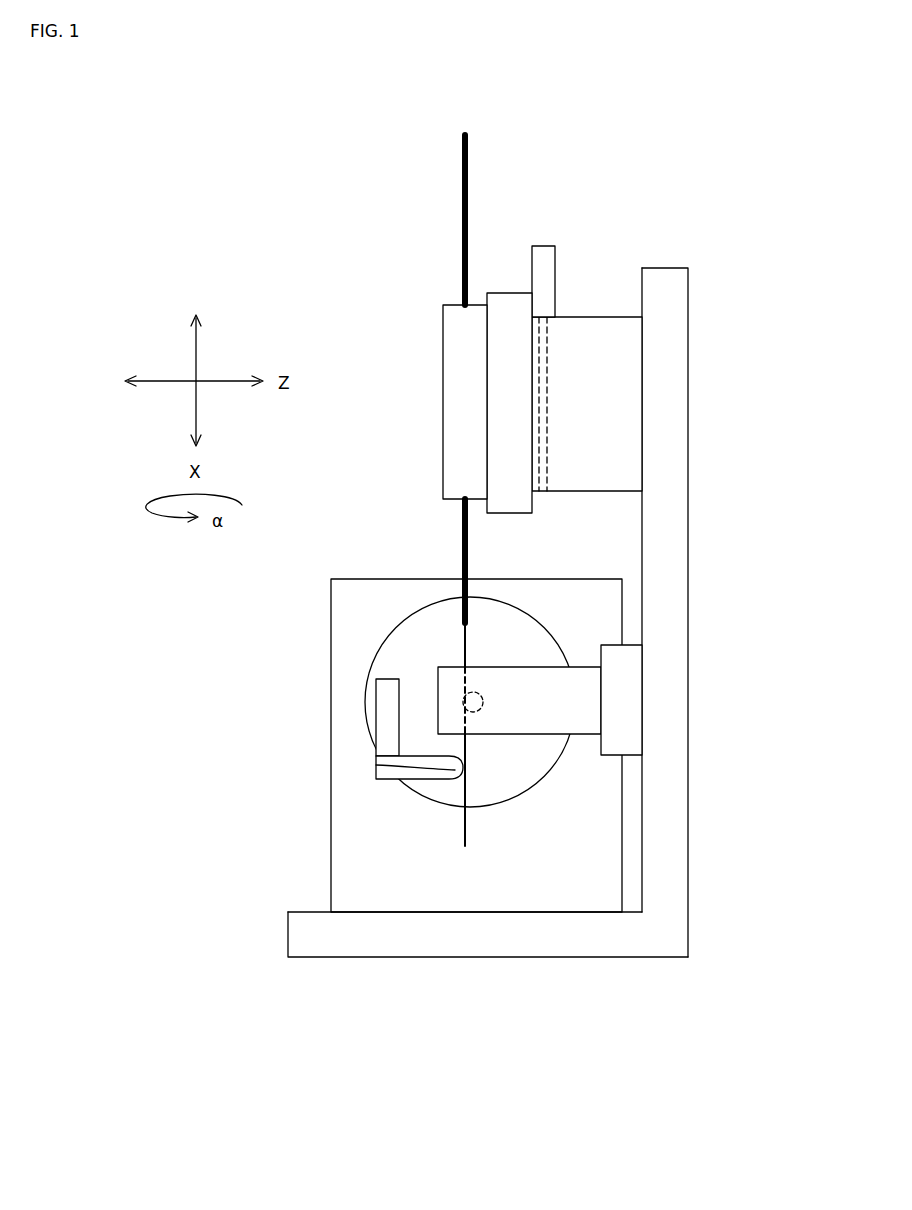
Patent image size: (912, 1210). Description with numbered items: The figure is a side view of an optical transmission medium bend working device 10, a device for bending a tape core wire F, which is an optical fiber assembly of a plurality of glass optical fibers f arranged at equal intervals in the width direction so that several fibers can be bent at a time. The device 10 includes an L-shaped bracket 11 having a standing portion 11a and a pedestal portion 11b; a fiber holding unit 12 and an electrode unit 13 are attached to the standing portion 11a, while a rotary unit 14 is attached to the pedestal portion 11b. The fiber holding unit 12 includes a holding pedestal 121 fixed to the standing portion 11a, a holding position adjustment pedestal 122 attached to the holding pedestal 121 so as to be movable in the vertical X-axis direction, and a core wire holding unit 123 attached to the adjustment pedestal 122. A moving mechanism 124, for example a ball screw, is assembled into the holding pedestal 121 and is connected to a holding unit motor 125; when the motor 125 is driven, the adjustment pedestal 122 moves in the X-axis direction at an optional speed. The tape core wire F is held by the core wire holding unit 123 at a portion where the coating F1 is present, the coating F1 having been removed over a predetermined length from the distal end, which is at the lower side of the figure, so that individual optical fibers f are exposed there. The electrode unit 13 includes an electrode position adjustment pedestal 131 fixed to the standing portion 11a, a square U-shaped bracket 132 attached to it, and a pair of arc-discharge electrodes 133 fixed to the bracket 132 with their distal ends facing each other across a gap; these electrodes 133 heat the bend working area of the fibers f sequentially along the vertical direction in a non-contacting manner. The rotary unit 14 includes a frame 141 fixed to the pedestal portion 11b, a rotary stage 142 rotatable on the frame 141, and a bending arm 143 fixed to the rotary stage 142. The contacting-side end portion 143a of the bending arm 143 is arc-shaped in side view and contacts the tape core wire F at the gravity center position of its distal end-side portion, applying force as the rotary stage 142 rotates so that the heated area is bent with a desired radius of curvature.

The optical transmission medium bend working device 10 is at (281, 243).
The L-shaped bracket 11 is at (672, 922).
The standing portion 11a is at (665, 535).
The pedestal portion 11b is at (470, 935).
The fiber holding unit 12 is at (570, 262).
The holding pedestal 121 is at (617, 335).
The holding position adjustment pedestal 122 is at (509, 315).
The core wire holding unit 123 is at (452, 394).
The moving mechanism 124 is at (547, 370).
The holding unit motor 125 is at (545, 278).
The electrode unit 13 is at (588, 655).
The electrode position adjustment pedestal 131 is at (619, 755).
The square U-shaped bracket 132 is at (503, 683).
The pair of arc-discharge electrodes 133 is at (476, 695).
The rotary unit 14 is at (320, 668).
The frame 141 is at (343, 857).
The rotary stage 142 is at (395, 653).
The bending arm 143 is at (387, 714).
The contacting-side end portion 143a is at (376, 765).
The tape core wire F is at (433, 165).
The coating F1 is at (462, 233).
The glass optical fiber f is at (465, 830).